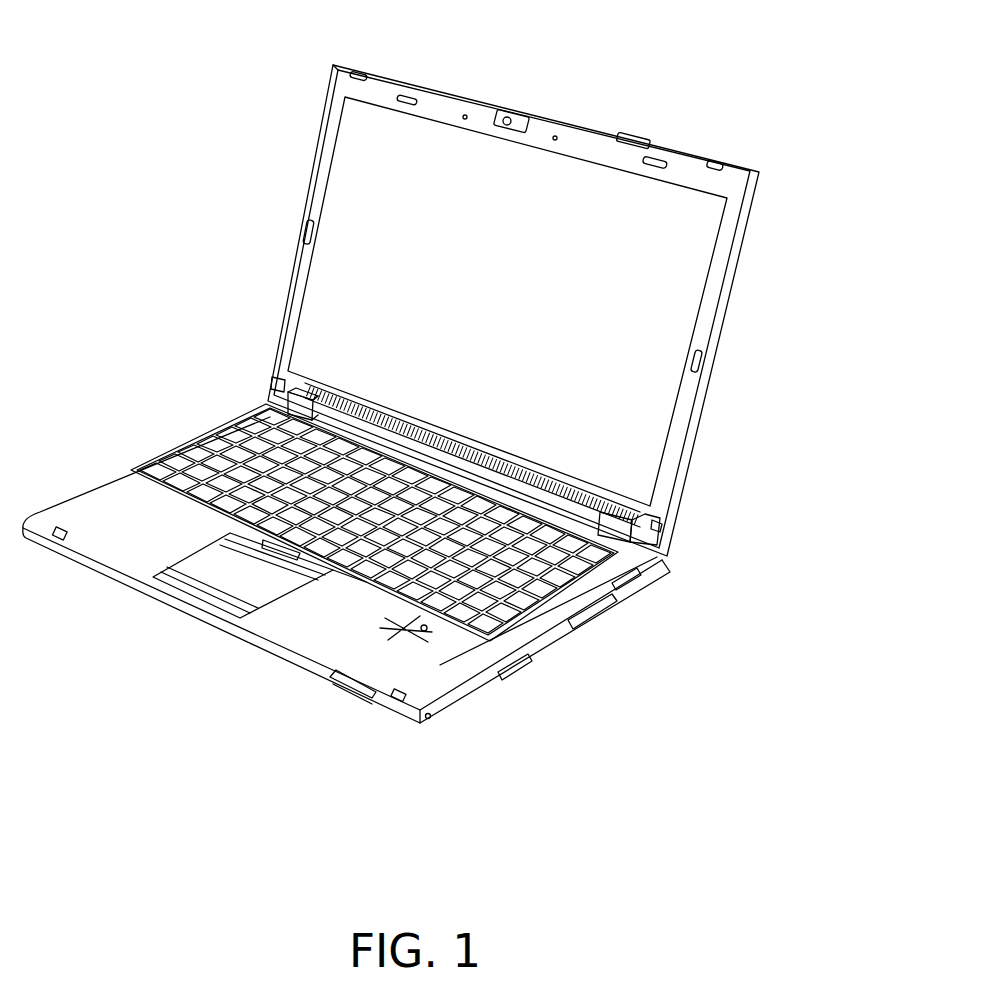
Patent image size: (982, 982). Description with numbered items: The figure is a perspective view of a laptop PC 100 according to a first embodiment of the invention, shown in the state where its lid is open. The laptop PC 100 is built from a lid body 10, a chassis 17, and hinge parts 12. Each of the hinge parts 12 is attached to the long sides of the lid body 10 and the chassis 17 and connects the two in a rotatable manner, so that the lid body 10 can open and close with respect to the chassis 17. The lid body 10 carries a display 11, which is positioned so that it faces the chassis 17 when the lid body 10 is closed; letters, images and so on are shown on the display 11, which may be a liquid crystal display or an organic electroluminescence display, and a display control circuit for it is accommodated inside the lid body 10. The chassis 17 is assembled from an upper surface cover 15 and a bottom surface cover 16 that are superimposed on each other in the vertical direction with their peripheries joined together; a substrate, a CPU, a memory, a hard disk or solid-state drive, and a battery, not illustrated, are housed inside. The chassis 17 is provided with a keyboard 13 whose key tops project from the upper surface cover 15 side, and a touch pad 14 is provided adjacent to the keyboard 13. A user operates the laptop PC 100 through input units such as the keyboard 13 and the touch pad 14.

The laptop PC 100 is at (185, 50).
The lid body 10 is at (545, 310).
The display 11 is at (648, 268).
The hinge parts 12 is at (300, 392).
The keyboard 13 is at (263, 443).
The touch pad 14 is at (250, 583).
The upper surface cover 15 is at (433, 680).
The bottom surface cover 16 is at (580, 778).
The chassis 17 is at (346, 633).